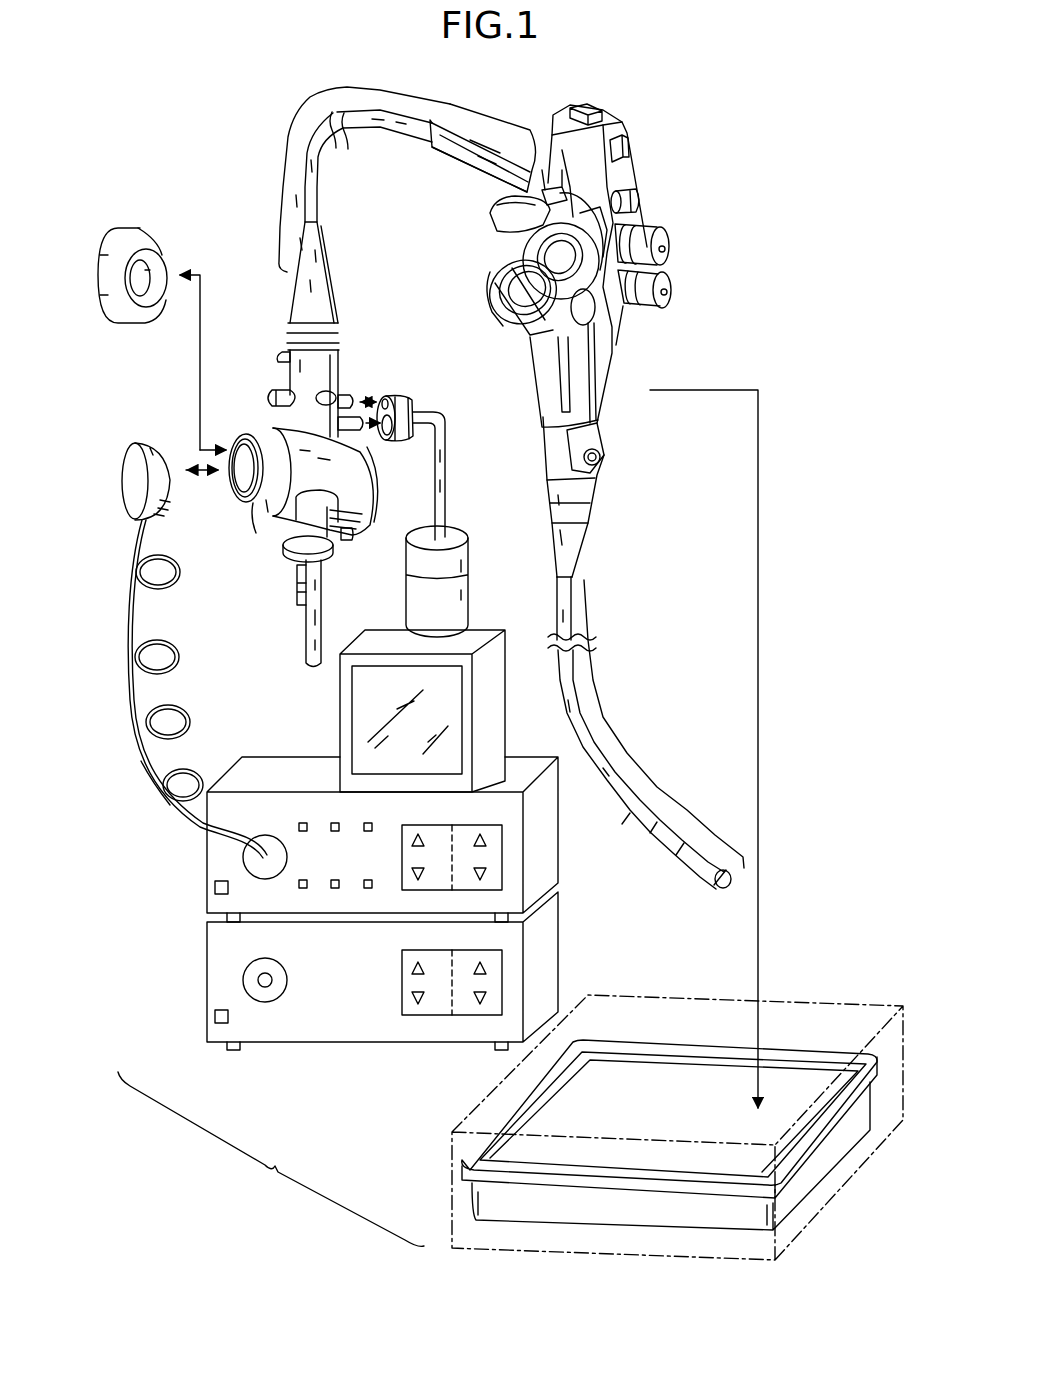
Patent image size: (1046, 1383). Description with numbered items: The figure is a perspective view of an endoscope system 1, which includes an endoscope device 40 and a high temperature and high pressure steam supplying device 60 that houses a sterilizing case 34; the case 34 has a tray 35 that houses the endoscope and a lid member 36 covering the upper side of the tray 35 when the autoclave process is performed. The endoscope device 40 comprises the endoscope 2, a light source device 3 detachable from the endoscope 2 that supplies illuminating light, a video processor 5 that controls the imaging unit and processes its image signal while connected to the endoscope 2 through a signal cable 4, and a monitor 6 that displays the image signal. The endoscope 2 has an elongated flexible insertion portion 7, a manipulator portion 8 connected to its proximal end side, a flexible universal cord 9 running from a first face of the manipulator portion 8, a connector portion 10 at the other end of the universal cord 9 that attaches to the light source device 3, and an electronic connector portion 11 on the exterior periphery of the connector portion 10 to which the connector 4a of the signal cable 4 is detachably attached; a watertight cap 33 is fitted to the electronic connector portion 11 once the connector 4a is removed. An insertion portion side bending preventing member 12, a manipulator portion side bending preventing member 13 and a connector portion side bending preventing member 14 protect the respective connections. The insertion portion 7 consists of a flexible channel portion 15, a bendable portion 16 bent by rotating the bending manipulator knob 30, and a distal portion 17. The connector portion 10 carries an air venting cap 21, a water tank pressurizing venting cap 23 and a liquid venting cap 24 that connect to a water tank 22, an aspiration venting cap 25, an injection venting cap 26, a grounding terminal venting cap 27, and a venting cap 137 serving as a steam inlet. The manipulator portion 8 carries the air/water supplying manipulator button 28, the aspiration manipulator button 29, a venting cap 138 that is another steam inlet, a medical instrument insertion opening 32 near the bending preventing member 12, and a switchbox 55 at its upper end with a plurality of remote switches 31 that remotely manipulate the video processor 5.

The endoscope system 1 is at (271, 1159).
The endoscope 2 is at (664, 210).
The light source device 3 is at (224, 969).
The signal cable 4 is at (182, 572).
The connector 4a is at (133, 473).
The video processor 5 is at (213, 867).
The monitor 6 is at (498, 742).
The insertion portion 7 is at (612, 741).
The manipulator portion 8 is at (607, 360).
The universal cord 9 is at (425, 100).
The connector portion 10 is at (340, 492).
The electronic connector portion 11 is at (272, 503).
The insertion portion side bending preventing member 12 is at (580, 541).
The manipulator portion side bending preventing member 13 is at (480, 183).
The connector portion side bending preventing member 14 is at (303, 294).
The flexible channel portion 15 is at (630, 817).
The bendable portion 16 is at (673, 855).
The distal portion 17 is at (718, 887).
The air venting cap 21 is at (298, 580).
The water tank 22 is at (409, 607).
The water tank pressurizing venting cap 23 is at (352, 392).
The liquid venting cap 24 is at (372, 438).
The aspiration venting cap 25 is at (272, 393).
The injection venting cap 26 is at (278, 354).
The grounding terminal venting cap 27 is at (338, 390).
The air/water supplying manipulator button 28 is at (671, 286).
The aspiration manipulator button 29 is at (669, 243).
The bending manipulator knob 30 is at (487, 257).
The remote switches 31 is at (618, 118).
The medical instrument insertion opening 32 is at (600, 458).
The watertight cap 33 is at (120, 230).
The sterilizing case 34 is at (662, 1040).
The tray 35 is at (827, 1157).
The lid member 36 is at (693, 1083).
The endoscope device 40 is at (141, 763).
The switchbox 55 is at (556, 140).
The high temperature and high pressure steam supplying device 60 is at (853, 1002).
The venting cap 137 is at (350, 540).
The venting cap 138 is at (637, 200).